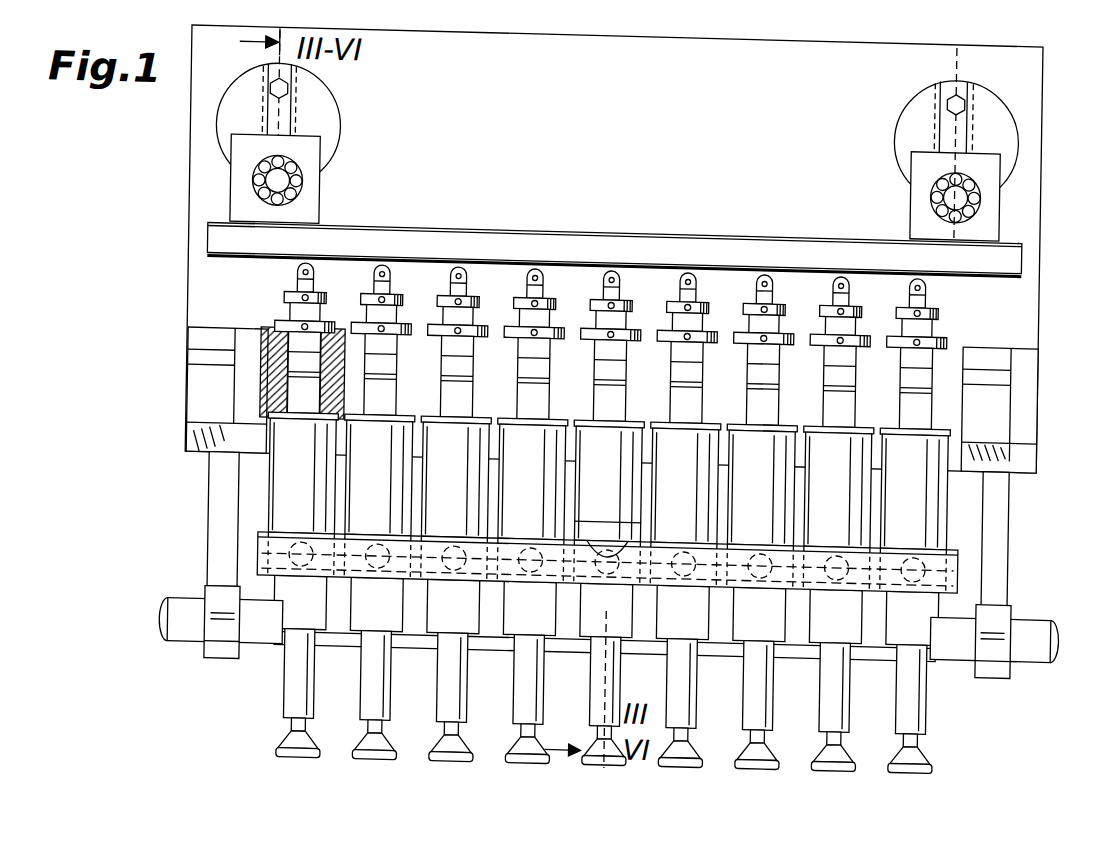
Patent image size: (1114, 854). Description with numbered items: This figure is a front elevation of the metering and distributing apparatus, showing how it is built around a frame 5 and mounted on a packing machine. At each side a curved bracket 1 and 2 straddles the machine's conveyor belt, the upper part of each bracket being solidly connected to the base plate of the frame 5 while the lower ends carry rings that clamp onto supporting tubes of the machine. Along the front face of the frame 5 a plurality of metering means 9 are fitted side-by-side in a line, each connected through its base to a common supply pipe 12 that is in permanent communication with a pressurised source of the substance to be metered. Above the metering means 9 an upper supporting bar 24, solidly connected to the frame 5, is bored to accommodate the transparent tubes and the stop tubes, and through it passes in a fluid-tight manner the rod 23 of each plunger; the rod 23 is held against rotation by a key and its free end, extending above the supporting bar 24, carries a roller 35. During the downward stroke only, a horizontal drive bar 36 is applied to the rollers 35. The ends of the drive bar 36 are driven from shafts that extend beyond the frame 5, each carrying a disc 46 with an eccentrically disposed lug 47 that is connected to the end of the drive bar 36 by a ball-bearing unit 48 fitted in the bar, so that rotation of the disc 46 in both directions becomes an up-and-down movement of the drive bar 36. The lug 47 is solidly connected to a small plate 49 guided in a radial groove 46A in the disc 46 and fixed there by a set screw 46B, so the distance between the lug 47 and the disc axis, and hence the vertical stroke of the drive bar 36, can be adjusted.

The curved bracket 1 is at (217, 515).
The curved bracket 2 is at (997, 532).
The frame 5 is at (184, 271).
The metering means 9 is at (443, 424).
The common supply pipe 12 is at (265, 556).
The rod 23 is at (300, 277).
The upper supporting bar 24 is at (213, 382).
The roller 35 is at (696, 256).
The horizontal drive bar 36 is at (459, 231).
The disc 46 is at (327, 104).
The radial groove 46A is at (939, 93).
The set screw 46B is at (957, 82).
The lug 47 is at (272, 178).
The ball-bearing unit 48 is at (296, 178).
The small plate 49 is at (955, 110).